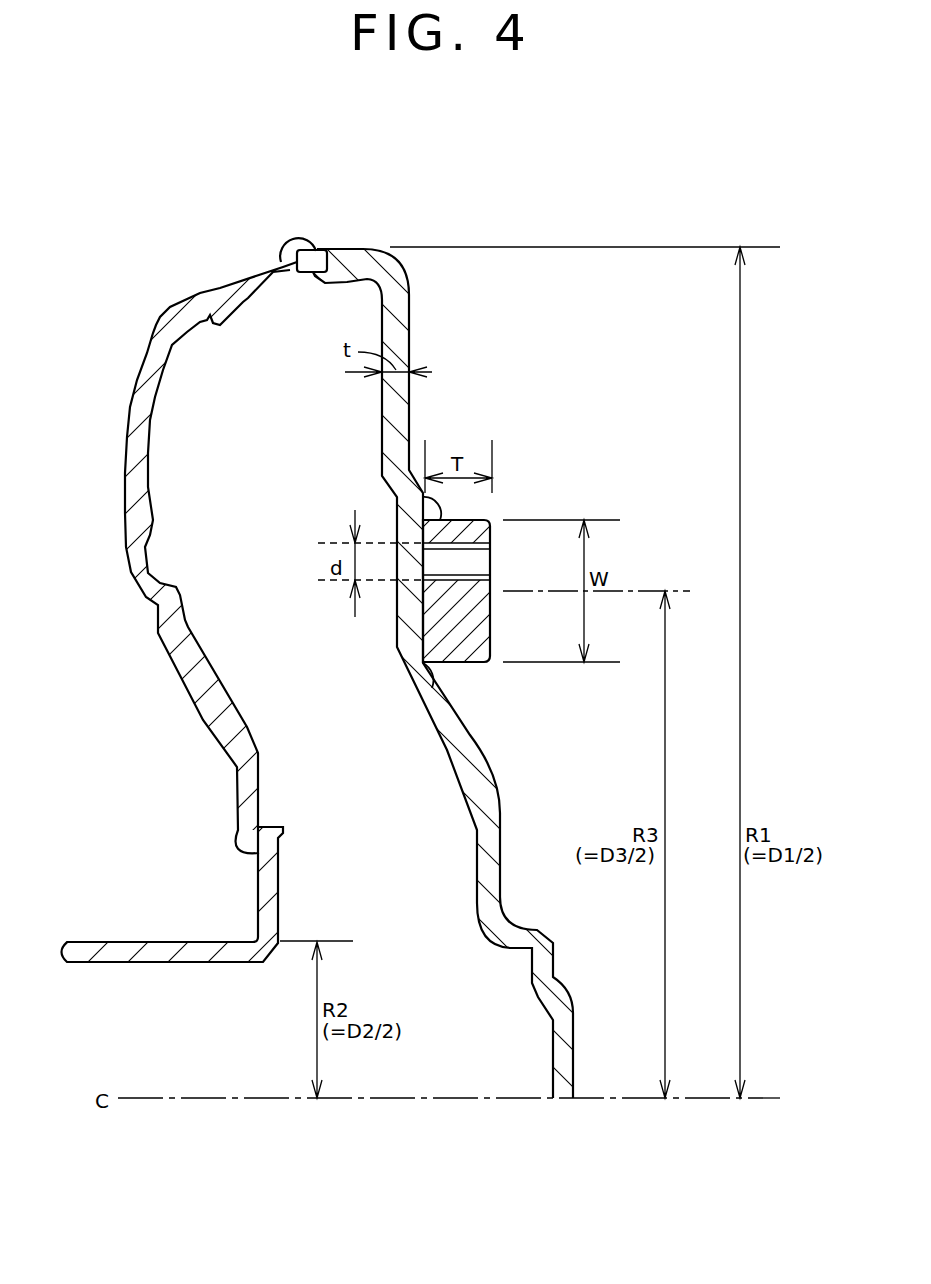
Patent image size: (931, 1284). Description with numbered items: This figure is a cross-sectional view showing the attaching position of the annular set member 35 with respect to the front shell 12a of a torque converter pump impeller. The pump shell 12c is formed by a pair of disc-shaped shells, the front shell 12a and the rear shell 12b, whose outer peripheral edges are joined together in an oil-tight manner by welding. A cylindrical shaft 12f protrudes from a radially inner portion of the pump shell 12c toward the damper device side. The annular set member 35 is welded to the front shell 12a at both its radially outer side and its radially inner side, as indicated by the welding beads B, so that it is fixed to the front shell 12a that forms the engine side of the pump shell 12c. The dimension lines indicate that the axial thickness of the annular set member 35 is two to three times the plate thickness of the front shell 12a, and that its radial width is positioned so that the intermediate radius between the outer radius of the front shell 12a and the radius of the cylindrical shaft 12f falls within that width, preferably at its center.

The front shell 12a is at (398, 318).
The rear shell 12b is at (212, 300).
The pump shell 12c is at (292, 205).
The cylindrical shaft 12f is at (165, 952).
The annular set member 35 is at (450, 642).
The welding bead B is at (440, 515).